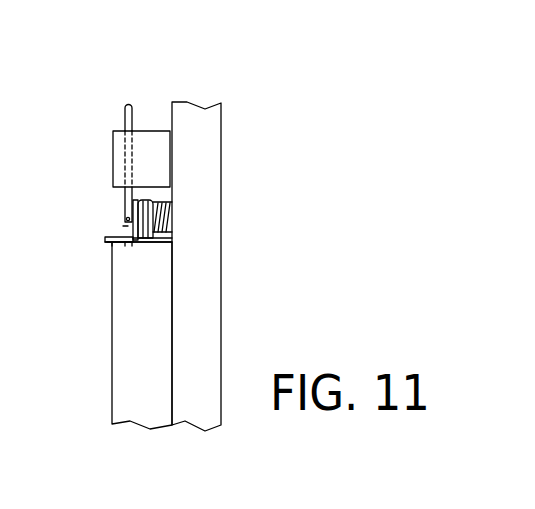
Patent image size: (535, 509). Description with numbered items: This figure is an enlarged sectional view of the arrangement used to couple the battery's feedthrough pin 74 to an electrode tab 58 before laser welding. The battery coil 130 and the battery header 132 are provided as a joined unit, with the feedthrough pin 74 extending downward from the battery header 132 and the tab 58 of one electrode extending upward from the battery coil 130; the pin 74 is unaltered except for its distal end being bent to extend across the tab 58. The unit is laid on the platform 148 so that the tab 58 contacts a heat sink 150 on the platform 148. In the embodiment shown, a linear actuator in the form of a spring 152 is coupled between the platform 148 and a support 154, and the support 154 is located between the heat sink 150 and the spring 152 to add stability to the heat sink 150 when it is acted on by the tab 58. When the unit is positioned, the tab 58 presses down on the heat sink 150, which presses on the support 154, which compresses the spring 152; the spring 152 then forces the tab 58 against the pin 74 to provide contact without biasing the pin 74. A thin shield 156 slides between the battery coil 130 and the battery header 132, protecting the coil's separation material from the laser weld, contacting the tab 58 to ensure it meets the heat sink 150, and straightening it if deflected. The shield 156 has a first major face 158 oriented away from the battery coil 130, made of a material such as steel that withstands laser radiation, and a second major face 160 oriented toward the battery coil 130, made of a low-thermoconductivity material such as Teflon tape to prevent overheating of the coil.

The platform 148 is at (186, 102).
The battery coil 130 is at (112, 388).
The battery header 132 is at (113, 145).
The feedthrough pin 74 is at (122, 203).
The tab 58 is at (124, 228).
The heat sink 150 is at (147, 202).
The spring 152 is at (168, 202).
The support 154 is at (153, 242).
The first major face 158 is at (107, 238).
The shield 156 is at (106, 243).
The second major face 160 is at (127, 243).